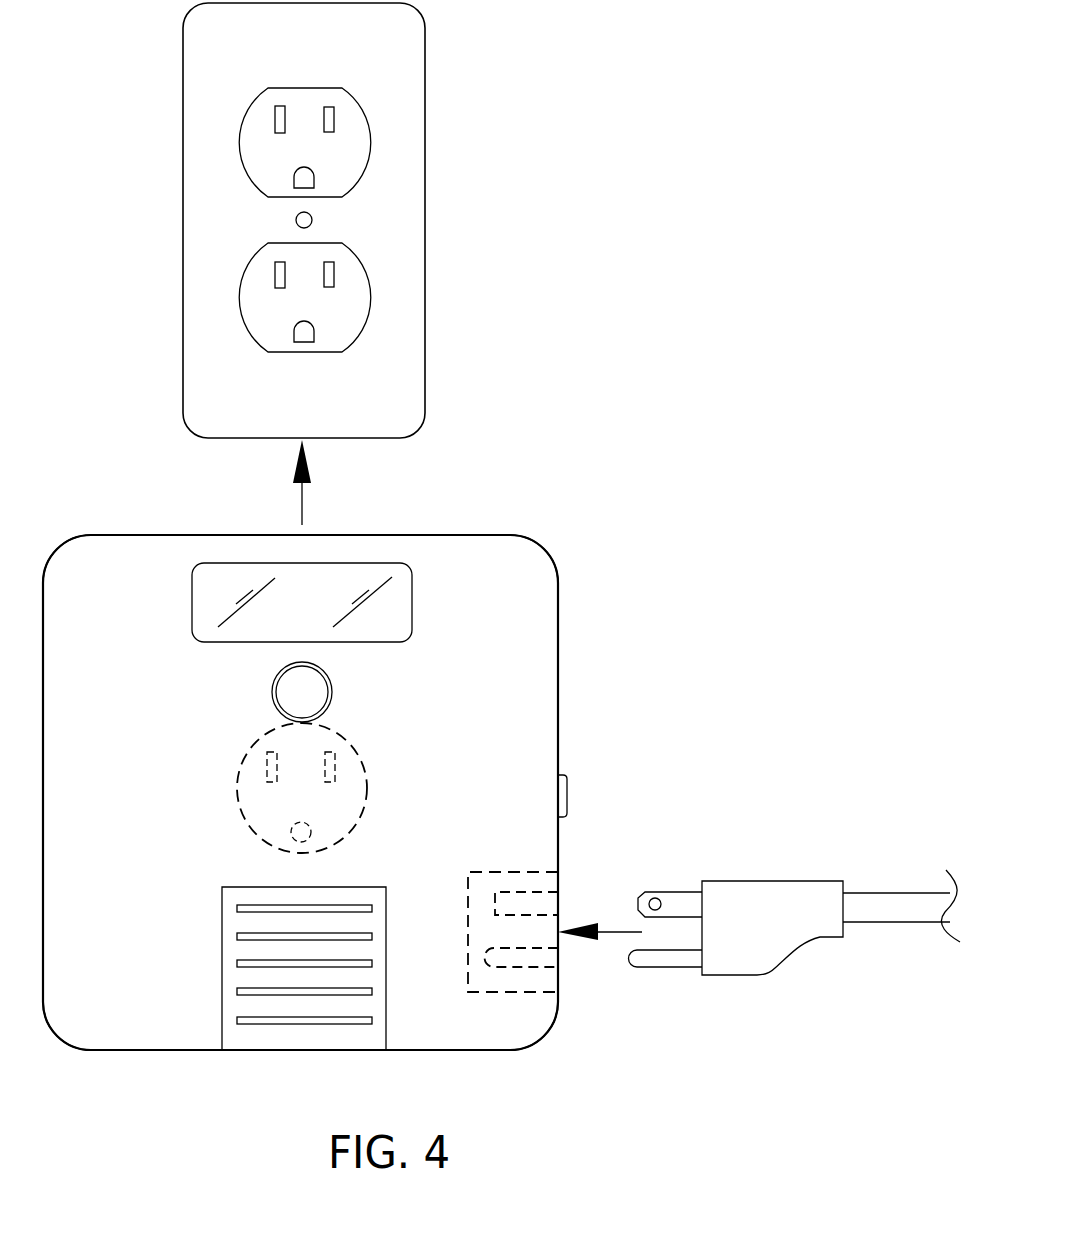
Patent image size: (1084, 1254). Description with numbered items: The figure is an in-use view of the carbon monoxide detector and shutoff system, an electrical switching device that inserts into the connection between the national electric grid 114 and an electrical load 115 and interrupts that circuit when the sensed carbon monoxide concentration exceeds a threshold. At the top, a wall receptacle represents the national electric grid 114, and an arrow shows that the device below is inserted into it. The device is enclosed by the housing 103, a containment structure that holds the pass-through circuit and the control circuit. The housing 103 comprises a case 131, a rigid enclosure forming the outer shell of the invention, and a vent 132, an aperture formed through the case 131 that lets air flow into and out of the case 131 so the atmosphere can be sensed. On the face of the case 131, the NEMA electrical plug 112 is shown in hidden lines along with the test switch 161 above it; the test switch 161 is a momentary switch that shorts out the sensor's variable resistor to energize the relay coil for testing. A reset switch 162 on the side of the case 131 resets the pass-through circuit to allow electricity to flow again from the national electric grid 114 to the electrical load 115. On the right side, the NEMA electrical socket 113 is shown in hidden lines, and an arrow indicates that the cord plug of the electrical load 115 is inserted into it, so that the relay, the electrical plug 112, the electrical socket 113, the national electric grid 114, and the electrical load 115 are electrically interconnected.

The housing 103 is at (117, 524).
The national electric grid 114 is at (343, 310).
The case 131 is at (530, 573).
The test switch 161 is at (322, 698).
The NEMA 5-15P electrical plug 112 is at (342, 788).
The reset switch 162 is at (567, 800).
The NEMA 5-15 electrical socket 113 is at (520, 890).
The vent 132 is at (347, 925).
The electrical load 115 is at (768, 905).